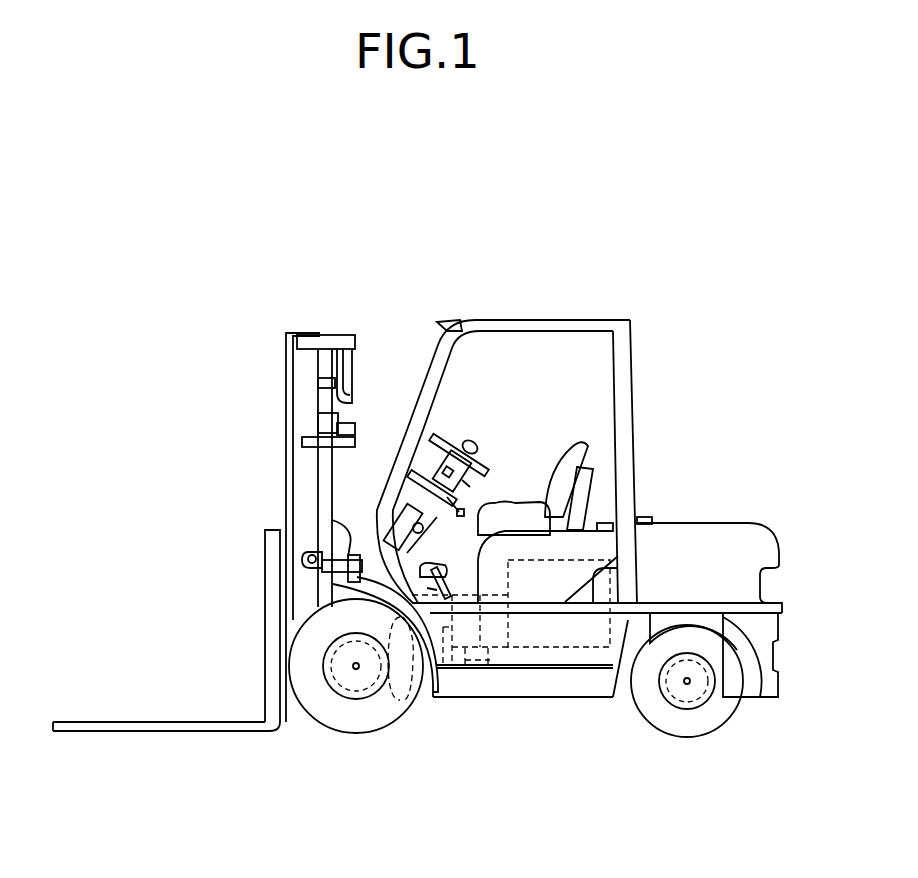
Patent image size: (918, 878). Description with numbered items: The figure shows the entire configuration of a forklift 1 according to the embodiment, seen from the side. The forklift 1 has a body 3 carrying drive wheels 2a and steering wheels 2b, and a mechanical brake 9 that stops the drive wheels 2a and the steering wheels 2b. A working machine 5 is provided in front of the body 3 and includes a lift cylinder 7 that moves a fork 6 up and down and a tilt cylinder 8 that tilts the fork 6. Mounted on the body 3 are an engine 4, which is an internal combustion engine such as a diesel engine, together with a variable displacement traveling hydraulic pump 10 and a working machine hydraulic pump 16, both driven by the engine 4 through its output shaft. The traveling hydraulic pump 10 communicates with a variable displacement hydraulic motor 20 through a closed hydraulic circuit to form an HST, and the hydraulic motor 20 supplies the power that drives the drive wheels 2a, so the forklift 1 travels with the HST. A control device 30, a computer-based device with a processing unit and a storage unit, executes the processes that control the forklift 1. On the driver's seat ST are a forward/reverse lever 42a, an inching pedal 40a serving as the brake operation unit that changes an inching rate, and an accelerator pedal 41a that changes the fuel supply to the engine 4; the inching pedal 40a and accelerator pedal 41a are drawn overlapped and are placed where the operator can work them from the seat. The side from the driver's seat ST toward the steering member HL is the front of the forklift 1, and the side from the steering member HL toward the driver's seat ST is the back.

The forklift 1 is at (616, 206).
The drive wheels 2a is at (353, 722).
The steering wheels 2b is at (688, 737).
The body 3 is at (505, 690).
The engine 4 is at (563, 650).
The working machine 5 is at (368, 242).
The fork 6 is at (101, 718).
The lift cylinder 7 is at (325, 470).
The tilt cylinder 8 is at (325, 520).
The mechanical brake 9 is at (350, 692).
The traveling hydraulic pump 10 is at (437, 694).
The working machine hydraulic pump 16 is at (467, 700).
The hydraulic motor 20 is at (408, 602).
The control device 30 is at (398, 618).
The inching pedal 40a is at (463, 566).
The accelerator pedal 41a is at (432, 589).
The forward/reverse lever 42a is at (467, 483).
The steering member HL is at (443, 447).
The driver's seat ST is at (575, 463).